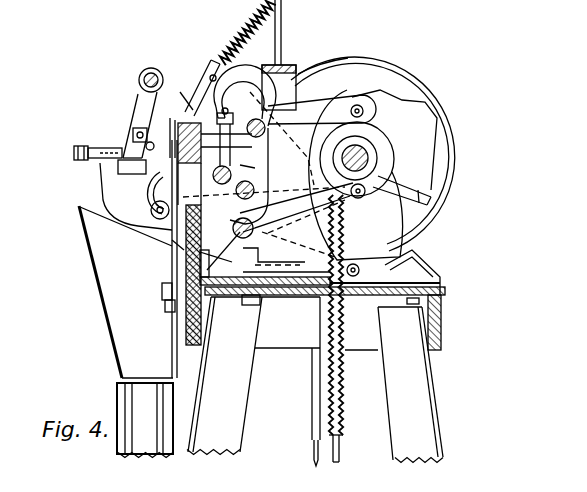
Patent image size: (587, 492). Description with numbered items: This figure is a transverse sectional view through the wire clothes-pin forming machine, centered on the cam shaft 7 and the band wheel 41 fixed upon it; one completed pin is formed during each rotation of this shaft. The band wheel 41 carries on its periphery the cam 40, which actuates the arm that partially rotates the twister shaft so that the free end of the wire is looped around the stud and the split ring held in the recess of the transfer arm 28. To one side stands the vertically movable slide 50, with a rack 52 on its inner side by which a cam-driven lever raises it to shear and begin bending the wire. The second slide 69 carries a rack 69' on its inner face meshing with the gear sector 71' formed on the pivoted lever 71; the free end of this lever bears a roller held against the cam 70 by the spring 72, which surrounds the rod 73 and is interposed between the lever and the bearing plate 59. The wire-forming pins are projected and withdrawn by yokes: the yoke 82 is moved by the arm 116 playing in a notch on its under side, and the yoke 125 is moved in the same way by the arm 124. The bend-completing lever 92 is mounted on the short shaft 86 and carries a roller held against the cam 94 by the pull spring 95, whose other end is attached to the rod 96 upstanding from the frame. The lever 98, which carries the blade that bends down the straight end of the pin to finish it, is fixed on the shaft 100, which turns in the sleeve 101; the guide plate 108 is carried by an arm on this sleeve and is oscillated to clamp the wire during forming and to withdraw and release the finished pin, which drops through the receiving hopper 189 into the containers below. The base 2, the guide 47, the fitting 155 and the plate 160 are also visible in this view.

The base frame 2 is at (441, 322).
The cam shaft 7 is at (370, 152).
The transfer arm 28 is at (150, 206).
The cam 40 is at (322, 60).
The band wheel 41 is at (393, 62).
The guide 47 is at (158, 193).
The slide 50 is at (171, 270).
The rack 52 is at (161, 290).
The plate 59 is at (312, 438).
The slide 69 is at (160, 313).
The rack 69' is at (163, 252).
The cam 70 is at (422, 200).
The pivoted lever 71 is at (302, 207).
The gear sector 71' is at (252, 244).
The spring 72 is at (343, 322).
The rod 73 is at (340, 450).
The yoke 82 is at (263, 158).
The short shaft 86 is at (256, 118).
The lever 92 is at (241, 72).
The cam 94 is at (380, 130).
The pull spring 95 is at (248, 32).
The rod 96 is at (282, 21).
The lever 98 is at (140, 108).
The shaft 100 is at (153, 68).
The sleeve 101 is at (138, 80).
The guide plate 108 is at (165, 102).
The arm 116 is at (258, 181).
The arm 124 is at (204, 174).
The yoke 125 is at (217, 125).
The fitting 155 is at (101, 183).
The plate 160 is at (373, 175).
The receiving hopper 189 is at (104, 311).